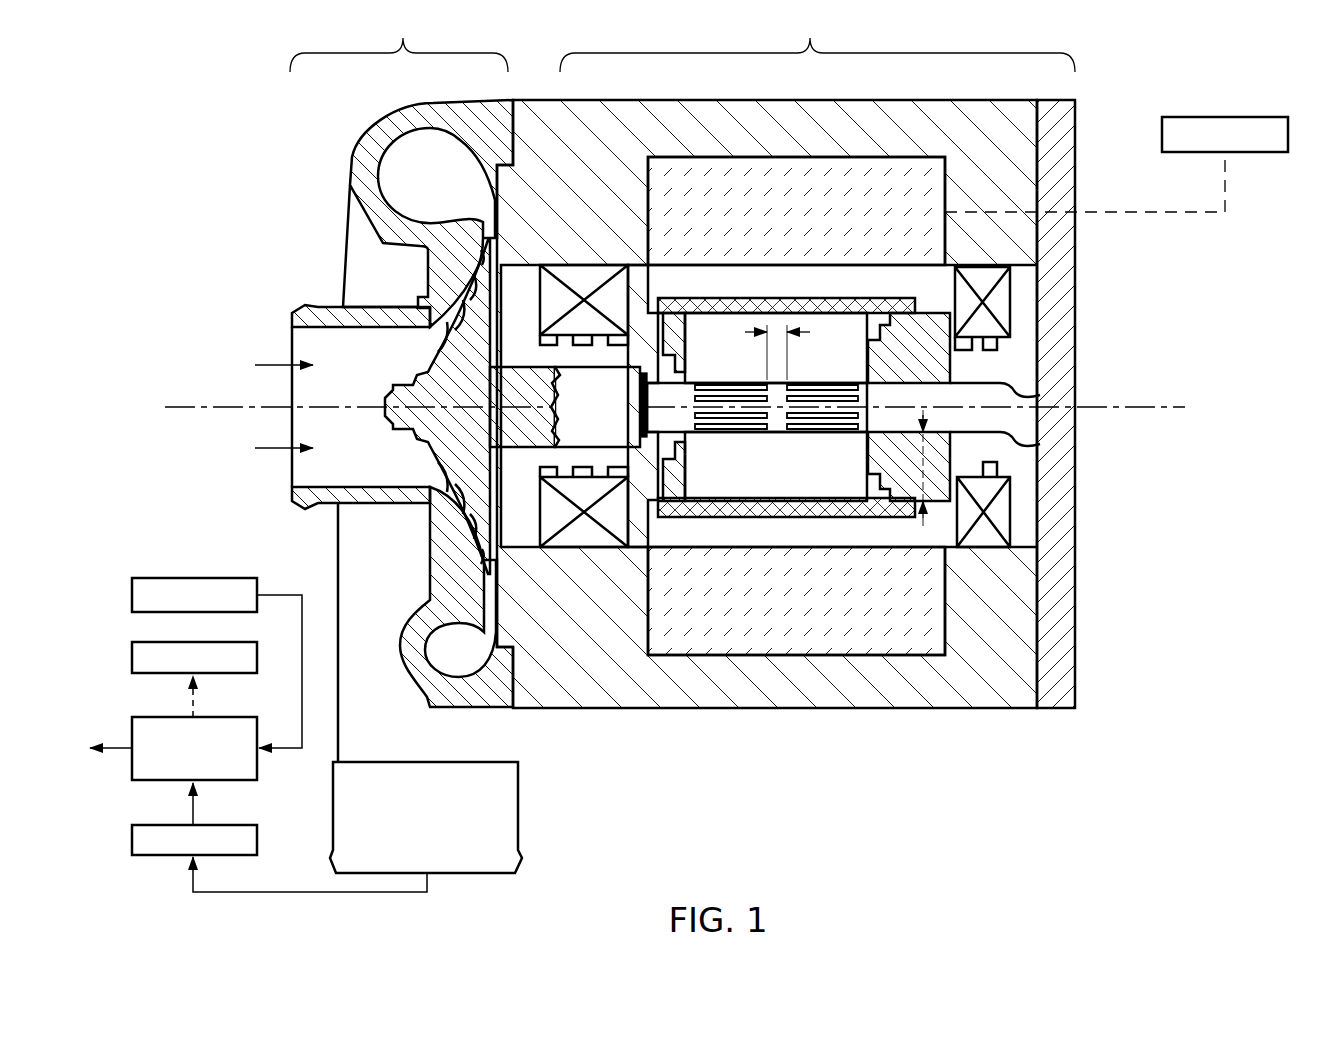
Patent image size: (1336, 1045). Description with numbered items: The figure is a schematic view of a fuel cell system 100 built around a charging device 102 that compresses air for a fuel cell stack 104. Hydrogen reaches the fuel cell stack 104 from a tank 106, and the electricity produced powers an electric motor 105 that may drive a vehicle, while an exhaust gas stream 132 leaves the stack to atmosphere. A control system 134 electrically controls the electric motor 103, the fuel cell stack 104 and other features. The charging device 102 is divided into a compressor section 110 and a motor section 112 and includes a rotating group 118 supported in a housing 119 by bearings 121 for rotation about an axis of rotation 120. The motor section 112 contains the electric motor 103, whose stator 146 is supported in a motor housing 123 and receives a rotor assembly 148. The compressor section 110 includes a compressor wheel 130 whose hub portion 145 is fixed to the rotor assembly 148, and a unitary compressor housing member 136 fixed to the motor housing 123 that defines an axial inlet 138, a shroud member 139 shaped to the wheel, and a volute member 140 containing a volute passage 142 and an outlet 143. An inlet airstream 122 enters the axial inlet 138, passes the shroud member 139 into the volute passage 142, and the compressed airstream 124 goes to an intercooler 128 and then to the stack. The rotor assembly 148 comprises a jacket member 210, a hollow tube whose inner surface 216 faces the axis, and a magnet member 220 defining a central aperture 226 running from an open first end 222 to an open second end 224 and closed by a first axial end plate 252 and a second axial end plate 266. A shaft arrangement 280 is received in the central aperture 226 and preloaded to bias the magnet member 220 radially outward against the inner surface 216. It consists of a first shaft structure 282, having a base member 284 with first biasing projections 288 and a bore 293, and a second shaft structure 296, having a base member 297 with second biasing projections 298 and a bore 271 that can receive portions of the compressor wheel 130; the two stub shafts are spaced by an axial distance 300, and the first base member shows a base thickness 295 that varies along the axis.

The fuel cell system 100 is at (124, 130).
The charging device 102 is at (516, 742).
The electric motor 103 is at (785, 710).
The fuel cell stack 104 is at (230, 782).
The electric motor 105 is at (215, 674).
The tank 106 is at (196, 578).
The compressor section 110 is at (399, 42).
The motor section 112 is at (817, 42).
The rotating group 118 is at (527, 393).
The housing 119 is at (533, 158).
The axis of rotation 120 is at (225, 399).
The bearings 121 is at (585, 272).
The inlet airstream 122 is at (283, 452).
The motor housing 123 is at (563, 641).
The compressed airstream 124 is at (427, 878).
The intercooler 128 is at (225, 857).
The compressor wheel 130 is at (447, 428).
The exhaust gas stream 132 is at (130, 749).
The control system 134 is at (1255, 153).
The compressor housing member 136 is at (435, 251).
The axial inlet 138 is at (312, 312).
The shroud member 139 is at (437, 601).
The volute member 140 is at (433, 103).
The volute passage 142 is at (403, 158).
The outlet 143 is at (515, 860).
The hub portion 145 is at (520, 440).
The stator 146 is at (773, 615).
The rotor assembly 148 is at (882, 486).
The jacket member 210 is at (812, 278).
The inner surface 216 is at (758, 320).
The magnet member 220 is at (727, 461).
The first end 222 is at (866, 415).
The second end 224 is at (693, 427).
The central aperture 226 is at (775, 425).
The first axial end plate 252 is at (878, 323).
The second axial end plate 266 is at (680, 318).
The bore 271 is at (617, 400).
The shaft arrangement 280 is at (640, 490).
The first shaft structure 282 is at (918, 350).
The base member 284 is at (997, 450).
The first biasing projections 288 is at (818, 410).
The bore 293 is at (1002, 393).
The base thickness 295 is at (871, 421).
The second shaft structure 296 is at (635, 460).
The base member 297 is at (647, 323).
The second biasing projections 298 is at (737, 393).
The axial distance 300 is at (750, 349).